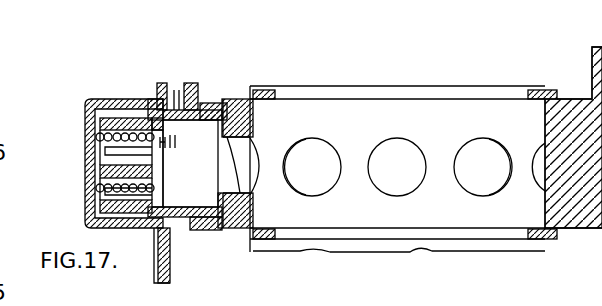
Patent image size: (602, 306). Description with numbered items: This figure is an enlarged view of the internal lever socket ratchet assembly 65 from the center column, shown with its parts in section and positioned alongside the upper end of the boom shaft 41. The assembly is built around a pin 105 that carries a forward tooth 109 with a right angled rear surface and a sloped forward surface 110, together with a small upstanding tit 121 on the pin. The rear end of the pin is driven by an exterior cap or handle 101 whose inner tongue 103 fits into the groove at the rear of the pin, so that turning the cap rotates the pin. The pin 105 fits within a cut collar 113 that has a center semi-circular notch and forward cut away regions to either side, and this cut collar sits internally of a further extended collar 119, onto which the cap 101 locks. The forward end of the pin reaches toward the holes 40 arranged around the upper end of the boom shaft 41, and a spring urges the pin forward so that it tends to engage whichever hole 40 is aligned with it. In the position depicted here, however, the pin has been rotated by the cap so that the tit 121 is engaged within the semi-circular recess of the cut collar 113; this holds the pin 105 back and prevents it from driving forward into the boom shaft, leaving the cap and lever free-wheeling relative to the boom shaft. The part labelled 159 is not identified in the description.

The lever socket ratchet assembly 65 is at (85, 94).
The inner tongue 103 is at (116, 175).
The exterior cap 101 is at (149, 97).
The extended collar 119 is at (193, 108).
The cut collar 113 is at (233, 115).
The seal 159 is at (256, 92).
The holes 40 is at (412, 148).
The boom shaft 41 is at (458, 122).
The forward tooth 109 is at (253, 145).
The sloped forward surface 110 is at (256, 140).
The upstanding tit 121 is at (181, 121).
The pin 105 is at (177, 167).